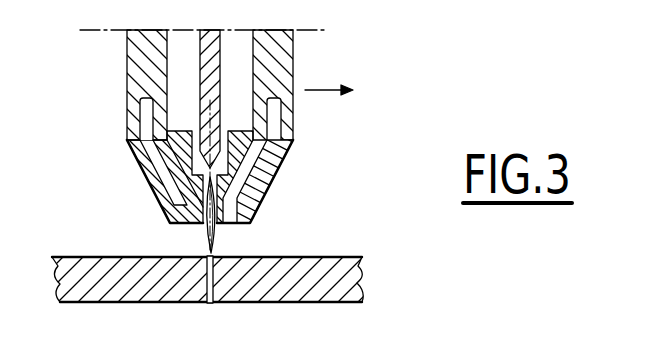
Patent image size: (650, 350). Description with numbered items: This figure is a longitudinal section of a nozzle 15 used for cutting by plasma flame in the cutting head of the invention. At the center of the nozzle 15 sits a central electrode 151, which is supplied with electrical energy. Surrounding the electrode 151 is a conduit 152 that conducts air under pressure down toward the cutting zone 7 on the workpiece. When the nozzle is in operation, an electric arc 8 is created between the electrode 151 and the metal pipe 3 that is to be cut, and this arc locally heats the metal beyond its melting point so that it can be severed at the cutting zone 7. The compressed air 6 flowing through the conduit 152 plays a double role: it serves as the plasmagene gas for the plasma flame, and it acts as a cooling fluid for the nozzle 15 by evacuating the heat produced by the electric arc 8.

The nozzle 15 is at (304, 163).
The central electrode 151 is at (200, 49).
The conduit 152 is at (180, 78).
The compressed air 6 is at (190, 151).
The electric arc 8 is at (206, 229).
The metal pipe 3 is at (323, 258).
The cutting zone 7 is at (216, 270).